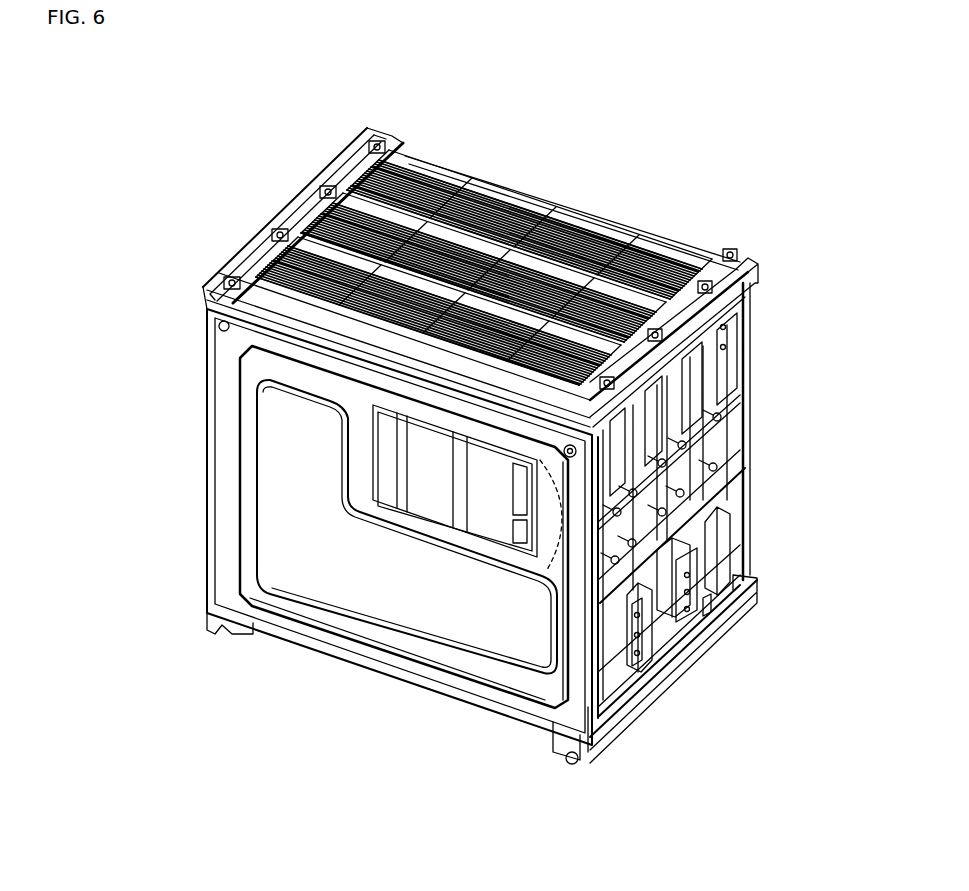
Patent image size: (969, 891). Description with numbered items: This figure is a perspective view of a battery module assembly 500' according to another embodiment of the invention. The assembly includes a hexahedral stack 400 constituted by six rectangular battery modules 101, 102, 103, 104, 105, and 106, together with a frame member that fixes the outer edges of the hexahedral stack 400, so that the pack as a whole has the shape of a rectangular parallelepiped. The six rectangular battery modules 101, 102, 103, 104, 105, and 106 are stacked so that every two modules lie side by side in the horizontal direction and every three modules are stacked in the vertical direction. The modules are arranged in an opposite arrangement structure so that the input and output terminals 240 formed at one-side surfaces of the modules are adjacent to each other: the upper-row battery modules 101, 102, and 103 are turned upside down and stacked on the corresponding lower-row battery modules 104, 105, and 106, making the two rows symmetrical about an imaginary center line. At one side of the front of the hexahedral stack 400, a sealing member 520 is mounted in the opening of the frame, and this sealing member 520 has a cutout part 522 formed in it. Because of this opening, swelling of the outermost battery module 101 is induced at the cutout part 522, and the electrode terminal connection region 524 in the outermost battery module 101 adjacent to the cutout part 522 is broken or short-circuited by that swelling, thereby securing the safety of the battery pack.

The rectangular battery module 101 is at (232, 270).
The rectangular battery module 102 is at (288, 218).
The rectangular battery module 103 is at (355, 170).
The rectangular battery module 104 is at (650, 703).
The rectangular battery module 105 is at (698, 657).
The rectangular battery module 106 is at (747, 607).
The input and output terminals 240 is at (718, 468).
The hexahedral stack 400 is at (570, 188).
The battery module assembly 500' is at (405, 425).
The sealing member 520 is at (328, 596).
The cutout part 522 is at (368, 460).
The electrode terminal connection region 524 is at (532, 558).